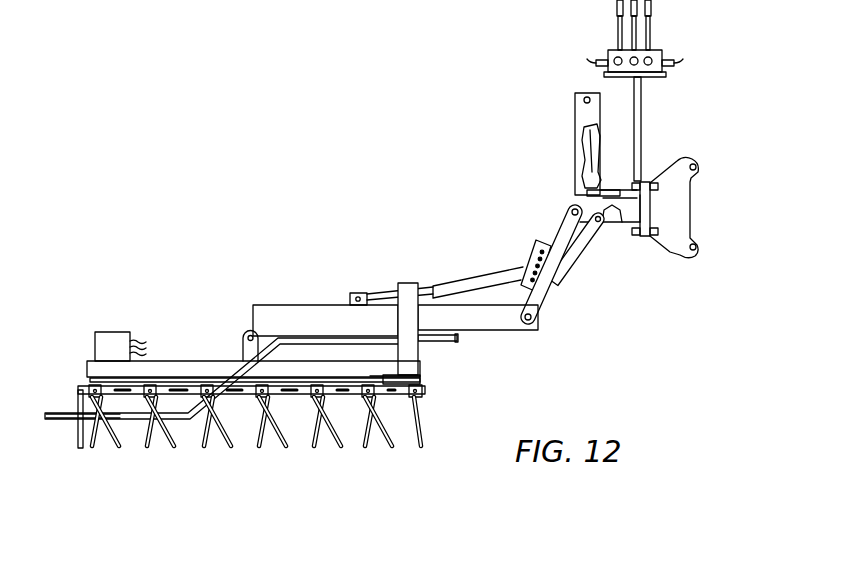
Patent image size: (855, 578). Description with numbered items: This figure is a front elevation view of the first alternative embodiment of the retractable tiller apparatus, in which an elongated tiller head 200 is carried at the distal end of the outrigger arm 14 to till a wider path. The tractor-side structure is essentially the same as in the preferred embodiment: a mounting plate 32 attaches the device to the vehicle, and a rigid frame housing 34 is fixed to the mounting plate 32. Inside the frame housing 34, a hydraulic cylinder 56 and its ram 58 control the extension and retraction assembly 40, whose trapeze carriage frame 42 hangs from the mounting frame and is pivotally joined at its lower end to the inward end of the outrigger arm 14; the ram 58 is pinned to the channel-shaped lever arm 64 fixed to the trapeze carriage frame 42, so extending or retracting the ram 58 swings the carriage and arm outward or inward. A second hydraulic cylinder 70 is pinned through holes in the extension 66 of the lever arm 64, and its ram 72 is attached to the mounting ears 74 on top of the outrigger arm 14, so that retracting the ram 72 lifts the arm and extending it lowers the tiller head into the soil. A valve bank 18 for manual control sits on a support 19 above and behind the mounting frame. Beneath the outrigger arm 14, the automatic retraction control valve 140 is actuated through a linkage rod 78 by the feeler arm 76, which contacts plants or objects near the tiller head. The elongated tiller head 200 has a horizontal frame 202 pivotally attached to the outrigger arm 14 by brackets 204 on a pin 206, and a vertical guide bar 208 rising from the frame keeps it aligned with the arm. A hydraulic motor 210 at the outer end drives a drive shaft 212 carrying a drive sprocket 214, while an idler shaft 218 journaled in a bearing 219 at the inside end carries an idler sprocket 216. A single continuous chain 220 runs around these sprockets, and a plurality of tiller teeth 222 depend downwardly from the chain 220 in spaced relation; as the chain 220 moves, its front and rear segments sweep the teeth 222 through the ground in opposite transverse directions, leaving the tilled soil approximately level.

The outrigger arm 14 is at (286, 304).
The valve bank 18 is at (661, 40).
The support 19 is at (641, 100).
The mounting plate 32 is at (691, 206).
The frame housing 34 is at (575, 131).
The extension and retraction assembly 40 is at (568, 278).
The trapeze carriage frame 42 is at (545, 305).
The hydraulic cylinder 56 is at (597, 143).
The ram 58 is at (585, 190).
The lever arm 64 is at (589, 246).
The extension 66 is at (538, 240).
The hydraulic cylinder 70 is at (478, 276).
The ram 72 is at (388, 292).
The mounting ears 74 is at (352, 293).
The feeler arm 76 is at (62, 419).
The linkage rod 78 is at (356, 337).
The automatic retraction control valve 140 is at (456, 341).
The elongated tiller head 200 is at (82, 373).
The horizontal frame 202 is at (190, 360).
The brackets 204 is at (243, 350).
The pin 206 is at (246, 336).
The vertical guide bar 208 is at (419, 353).
The hydraulic motor 210 is at (118, 332).
The drive shaft 212 is at (90, 380).
The drive sprocket 214 is at (78, 396).
The idler sprocket 216 is at (423, 393).
The idler shaft 218 is at (421, 380).
The bearing 219 is at (384, 376).
The chain 220 is at (246, 402).
The tiller teeth 222 is at (288, 447).